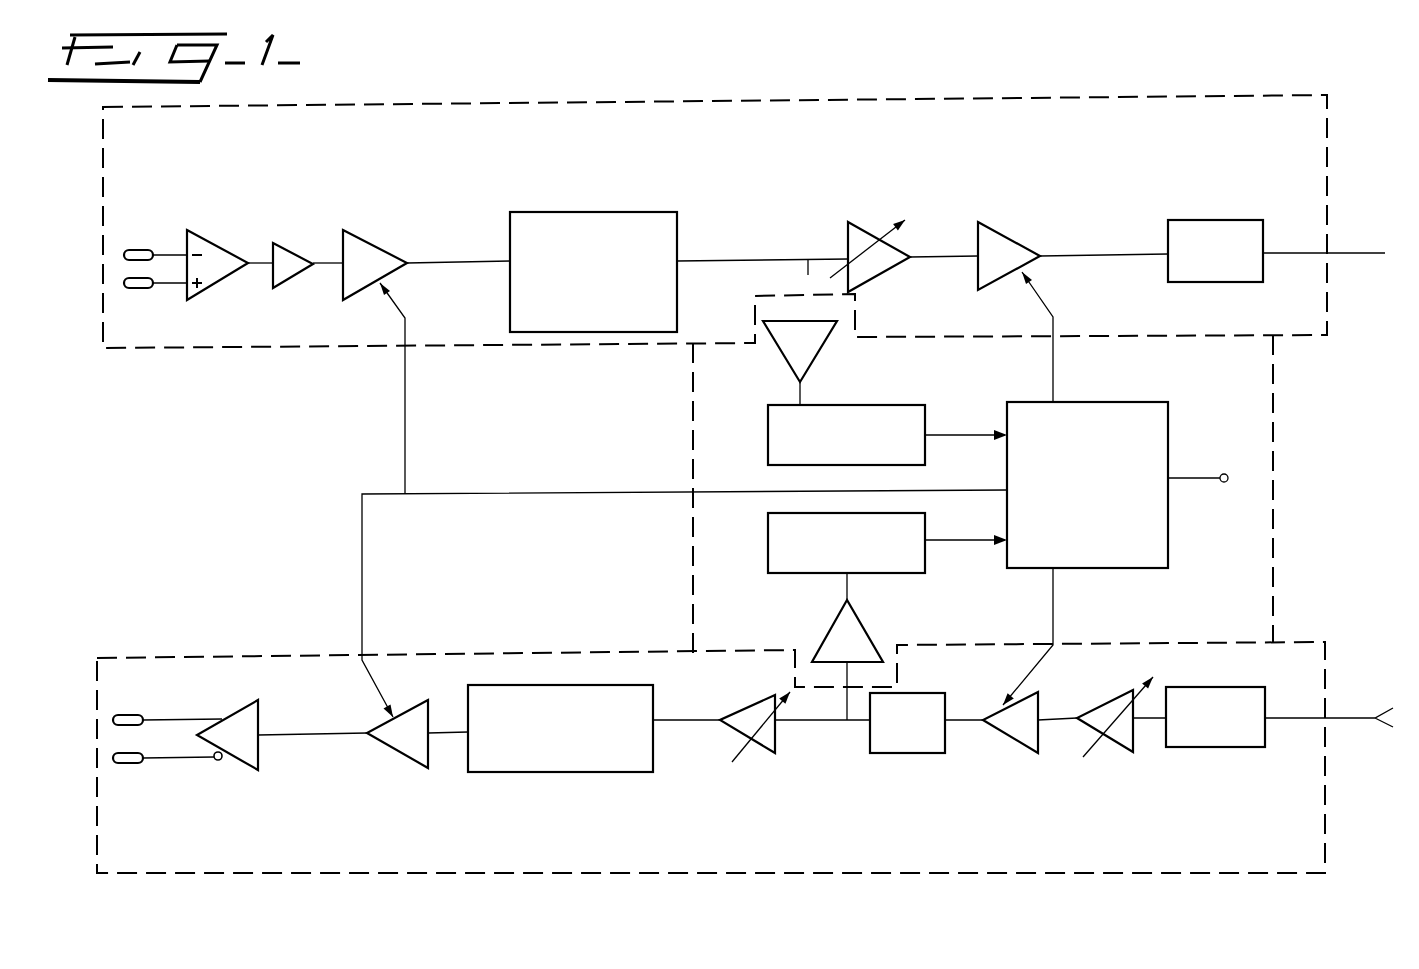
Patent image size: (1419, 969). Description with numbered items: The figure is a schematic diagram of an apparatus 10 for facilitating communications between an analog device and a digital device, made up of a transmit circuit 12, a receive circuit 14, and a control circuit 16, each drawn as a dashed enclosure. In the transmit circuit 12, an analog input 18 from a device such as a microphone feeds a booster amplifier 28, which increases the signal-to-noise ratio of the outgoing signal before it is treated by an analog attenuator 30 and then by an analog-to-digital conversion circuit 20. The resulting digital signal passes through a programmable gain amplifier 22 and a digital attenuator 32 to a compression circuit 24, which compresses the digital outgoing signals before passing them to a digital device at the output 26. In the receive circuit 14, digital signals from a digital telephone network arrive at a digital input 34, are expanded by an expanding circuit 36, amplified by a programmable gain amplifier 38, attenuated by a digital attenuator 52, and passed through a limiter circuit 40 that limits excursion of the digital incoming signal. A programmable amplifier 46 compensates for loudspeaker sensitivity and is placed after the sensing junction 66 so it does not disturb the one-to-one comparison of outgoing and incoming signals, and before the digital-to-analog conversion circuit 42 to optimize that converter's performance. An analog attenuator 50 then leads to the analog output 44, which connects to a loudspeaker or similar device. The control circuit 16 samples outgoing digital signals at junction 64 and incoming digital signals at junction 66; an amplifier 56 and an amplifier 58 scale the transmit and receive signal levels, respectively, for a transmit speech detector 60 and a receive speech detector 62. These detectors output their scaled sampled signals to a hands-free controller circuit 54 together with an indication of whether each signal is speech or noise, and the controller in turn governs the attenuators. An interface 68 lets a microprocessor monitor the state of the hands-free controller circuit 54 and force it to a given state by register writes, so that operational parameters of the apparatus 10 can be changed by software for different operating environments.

The apparatus 10 is at (208, 512).
The transmit circuit 12 is at (815, 97).
The receive circuit 14 is at (650, 878).
The control circuit 16 is at (1279, 466).
The analog input 18 is at (200, 232).
The analog-to-digital conversion circuit 20 is at (596, 227).
The programmable gain amplifier 22 is at (862, 225).
The compression circuit 24 is at (1228, 220).
The output 26 is at (1362, 253).
The booster amplifier 28 is at (293, 253).
The analog attenuator 30 is at (340, 278).
The digital attenuator 32 is at (1000, 232).
The digital input 34 is at (1380, 712).
The expanding circuit 36 is at (1220, 747).
The programmable gain amplifier 38 is at (1113, 743).
The limiter circuit 40 is at (910, 753).
The digital-to-analog conversion circuit 42 is at (605, 772).
The analog output 44 is at (235, 758).
The programmable amplifier 46 is at (763, 752).
The analog attenuator 50 is at (388, 747).
The digital attenuator 52 is at (1007, 737).
The hands-free controller circuit 54 is at (1170, 427).
The amplifier 56 is at (780, 320).
The amplifier 58 is at (833, 618).
The transmit speech detector 60 is at (768, 436).
The receive speech detector 62 is at (768, 547).
The junction 64 is at (795, 320).
The junction 66 is at (848, 727).
The interface 68 is at (1215, 480).